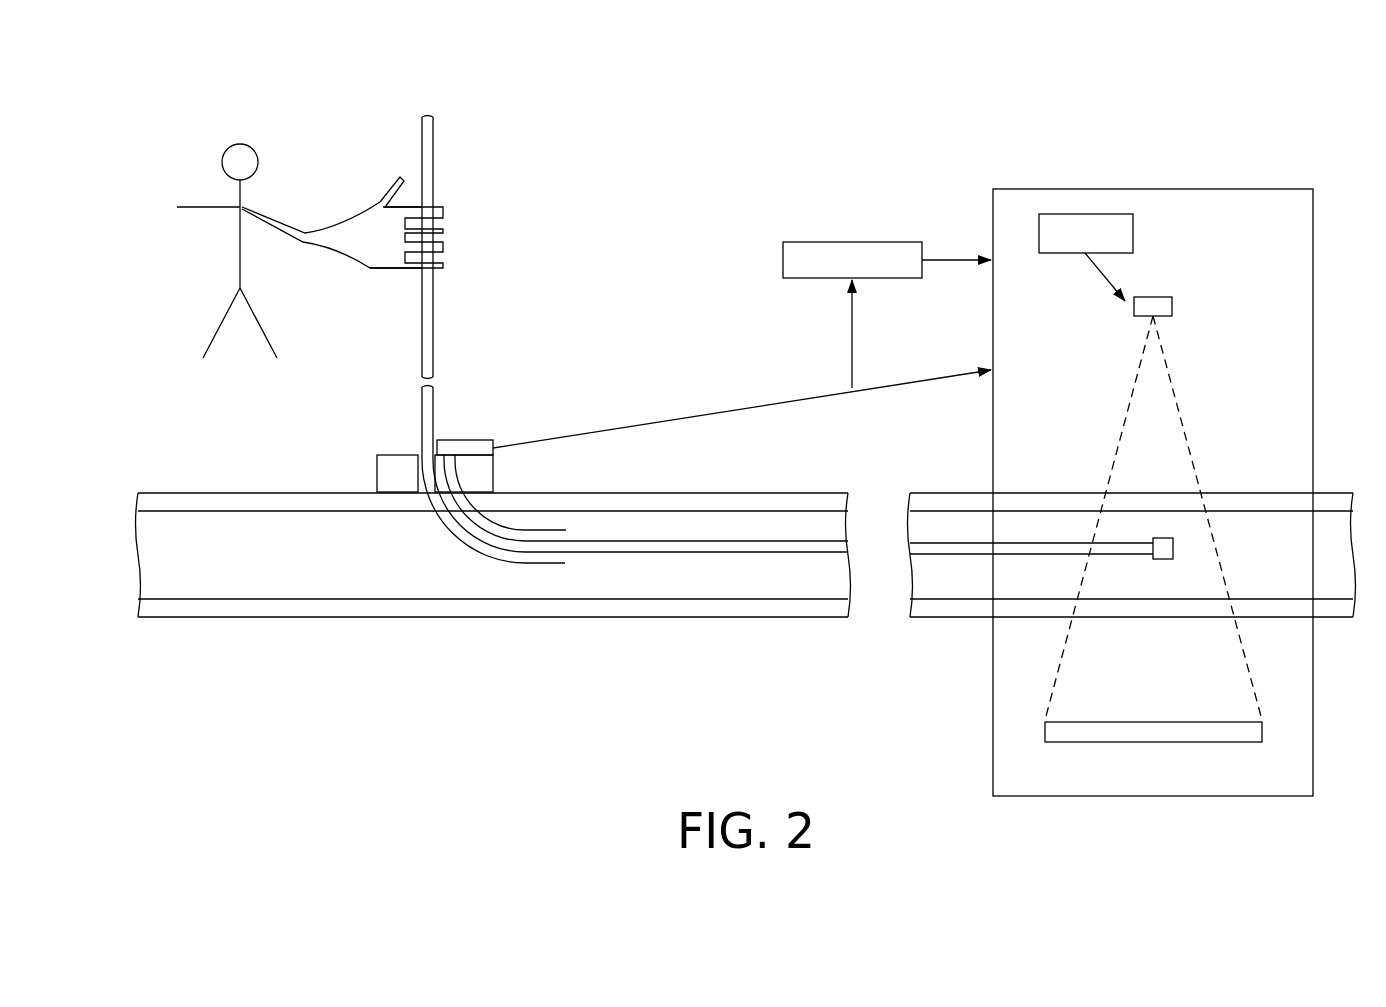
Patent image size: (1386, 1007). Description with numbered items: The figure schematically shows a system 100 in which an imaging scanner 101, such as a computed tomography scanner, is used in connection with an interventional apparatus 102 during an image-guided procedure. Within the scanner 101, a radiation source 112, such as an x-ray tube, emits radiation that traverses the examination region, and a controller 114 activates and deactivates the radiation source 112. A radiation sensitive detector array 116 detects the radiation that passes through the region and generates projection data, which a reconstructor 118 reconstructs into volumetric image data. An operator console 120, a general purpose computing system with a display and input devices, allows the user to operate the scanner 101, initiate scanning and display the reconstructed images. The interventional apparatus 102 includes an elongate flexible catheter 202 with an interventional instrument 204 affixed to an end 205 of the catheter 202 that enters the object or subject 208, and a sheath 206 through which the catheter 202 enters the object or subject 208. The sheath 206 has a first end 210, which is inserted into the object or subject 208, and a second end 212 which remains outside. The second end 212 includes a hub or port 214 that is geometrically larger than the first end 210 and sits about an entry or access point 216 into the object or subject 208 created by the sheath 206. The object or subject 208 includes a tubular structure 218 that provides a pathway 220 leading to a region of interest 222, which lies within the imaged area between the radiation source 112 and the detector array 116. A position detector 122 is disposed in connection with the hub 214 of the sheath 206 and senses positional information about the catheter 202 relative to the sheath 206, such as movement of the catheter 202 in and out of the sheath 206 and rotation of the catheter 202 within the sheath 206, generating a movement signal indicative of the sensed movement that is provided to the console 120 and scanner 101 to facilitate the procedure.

The system 100 is at (745, 92).
The imaging scanner 101 is at (1214, 189).
The interventional apparatus 102 is at (398, 98).
The radiation source 112 is at (1172, 306).
The controller 114 is at (1084, 214).
The radiation sensitive detector array 116 is at (1164, 742).
The reconstructor 118 is at (447, 113).
The operator console 120 is at (887, 242).
The position detector 122 is at (482, 440).
The catheter 202 is at (433, 183).
The interventional instrument 204 is at (1164, 559).
The end of the catheter 205 is at (1122, 535).
The sheath 206 is at (500, 558).
The object or subject 208 is at (338, 617).
The first end of the sheath 210 is at (544, 577).
The second end of the sheath 212 is at (355, 444).
The hub or port 214 is at (377, 467).
The entry or access point 216 is at (430, 515).
The tubular structure 218 is at (250, 598).
The pathway 220 is at (736, 521).
The region of interest 222 is at (1164, 484).